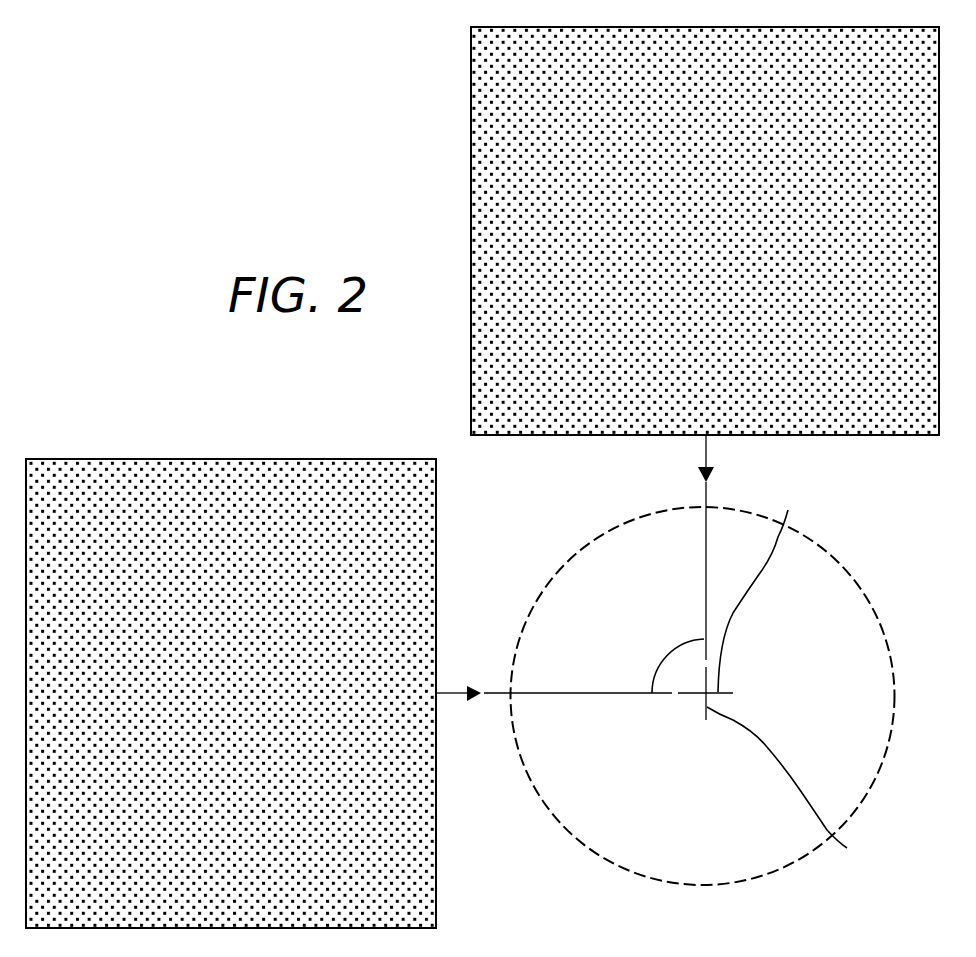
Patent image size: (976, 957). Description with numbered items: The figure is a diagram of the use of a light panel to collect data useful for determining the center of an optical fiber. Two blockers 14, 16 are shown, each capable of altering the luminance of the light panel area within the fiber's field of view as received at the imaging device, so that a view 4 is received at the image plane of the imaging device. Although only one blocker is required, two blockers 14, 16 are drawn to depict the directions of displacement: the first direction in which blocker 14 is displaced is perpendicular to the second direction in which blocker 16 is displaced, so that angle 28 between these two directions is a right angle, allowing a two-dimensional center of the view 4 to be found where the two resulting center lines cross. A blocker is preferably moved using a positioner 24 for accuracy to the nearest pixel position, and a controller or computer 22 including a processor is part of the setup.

The blocker 14 is at (400, 505).
The blocker 16 is at (907, 70).
The view as received at image plane of imaging device 4 is at (828, 550).
The controller or computer 22 is at (792, 788).
The positioner 24 is at (759, 589).
The angle between two perpendicularly-disposed directions in which blockers are move 28 is at (704, 639).